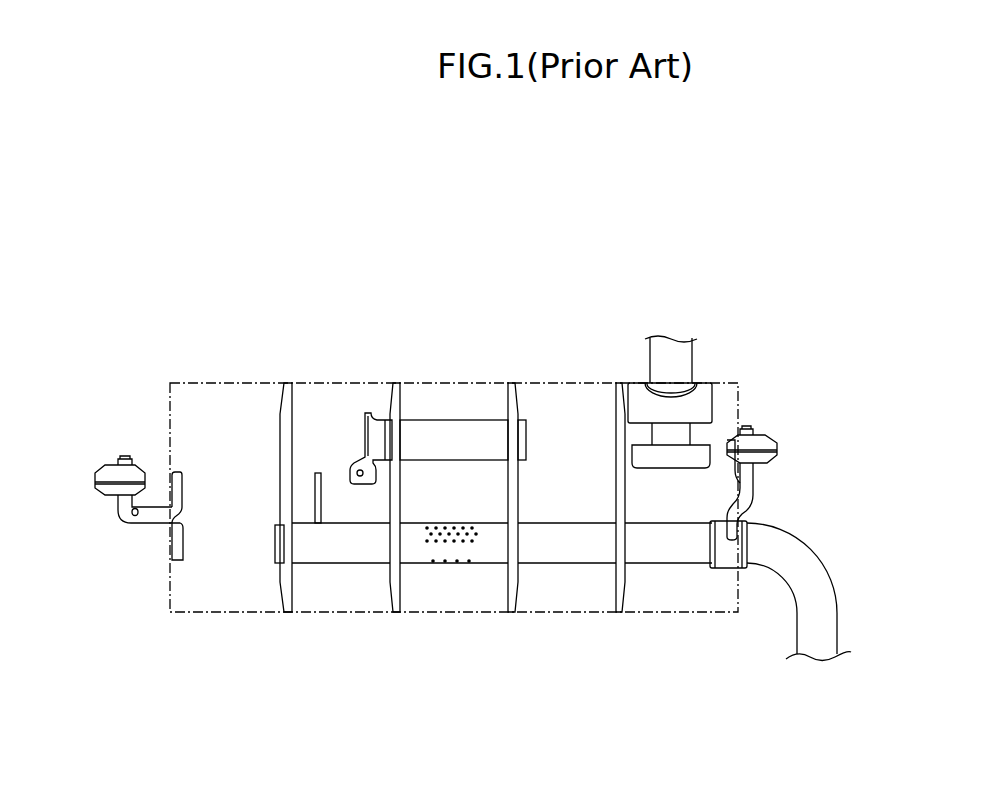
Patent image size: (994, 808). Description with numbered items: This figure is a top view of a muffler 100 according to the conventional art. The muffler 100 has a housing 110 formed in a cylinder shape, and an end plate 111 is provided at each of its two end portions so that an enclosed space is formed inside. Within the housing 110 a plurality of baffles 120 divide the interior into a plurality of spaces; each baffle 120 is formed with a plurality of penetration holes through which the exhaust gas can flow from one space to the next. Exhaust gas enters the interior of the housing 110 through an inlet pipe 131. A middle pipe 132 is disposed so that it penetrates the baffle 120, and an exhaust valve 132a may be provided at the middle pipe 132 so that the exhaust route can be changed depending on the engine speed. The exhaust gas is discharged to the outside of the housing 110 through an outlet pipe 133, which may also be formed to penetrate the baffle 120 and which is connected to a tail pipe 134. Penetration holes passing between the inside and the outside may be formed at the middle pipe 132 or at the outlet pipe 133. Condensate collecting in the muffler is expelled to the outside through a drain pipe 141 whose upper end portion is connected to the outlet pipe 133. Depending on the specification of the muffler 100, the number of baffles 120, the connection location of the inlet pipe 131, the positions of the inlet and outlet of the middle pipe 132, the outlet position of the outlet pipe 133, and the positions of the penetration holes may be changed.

The muffler 100 is at (764, 229).
The housing 110 is at (219, 383).
The end plate 111 is at (170, 423).
The baffle 120 is at (289, 436).
The inlet pipe 131 is at (682, 362).
The middle pipe 132 is at (468, 433).
The exhaust valve 132a is at (358, 428).
The outlet pipe 133 is at (571, 553).
The tail pipe 134 is at (830, 615).
The drain pipe 141 is at (318, 490).